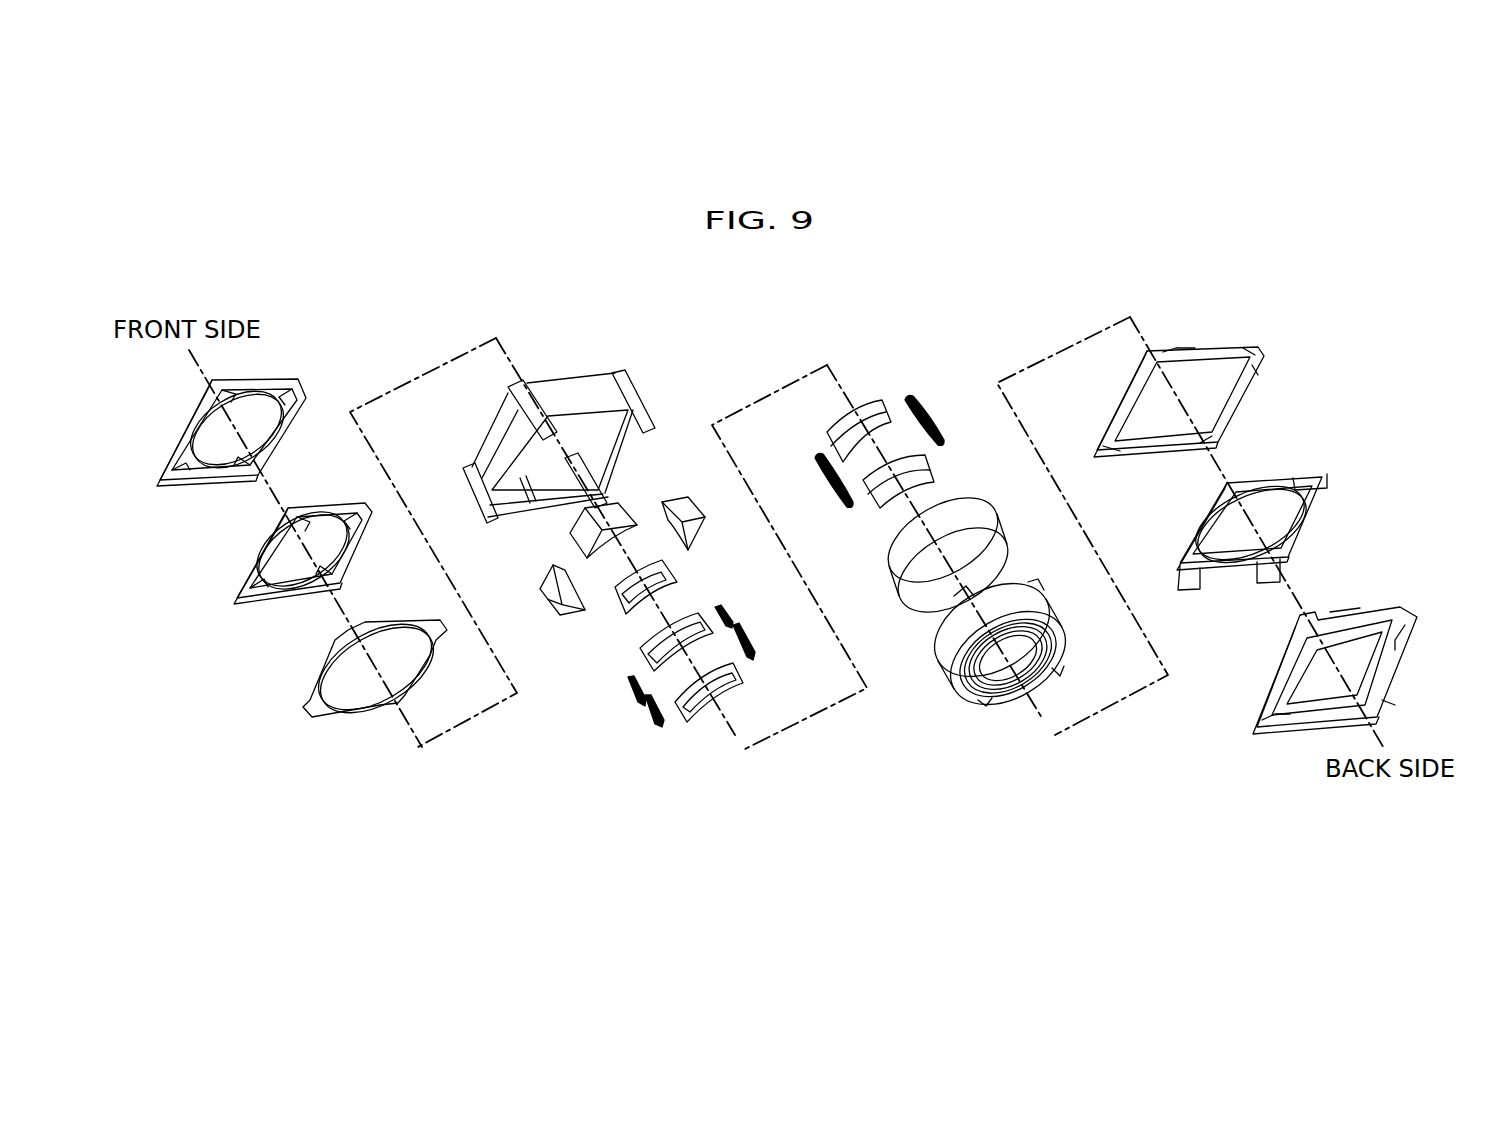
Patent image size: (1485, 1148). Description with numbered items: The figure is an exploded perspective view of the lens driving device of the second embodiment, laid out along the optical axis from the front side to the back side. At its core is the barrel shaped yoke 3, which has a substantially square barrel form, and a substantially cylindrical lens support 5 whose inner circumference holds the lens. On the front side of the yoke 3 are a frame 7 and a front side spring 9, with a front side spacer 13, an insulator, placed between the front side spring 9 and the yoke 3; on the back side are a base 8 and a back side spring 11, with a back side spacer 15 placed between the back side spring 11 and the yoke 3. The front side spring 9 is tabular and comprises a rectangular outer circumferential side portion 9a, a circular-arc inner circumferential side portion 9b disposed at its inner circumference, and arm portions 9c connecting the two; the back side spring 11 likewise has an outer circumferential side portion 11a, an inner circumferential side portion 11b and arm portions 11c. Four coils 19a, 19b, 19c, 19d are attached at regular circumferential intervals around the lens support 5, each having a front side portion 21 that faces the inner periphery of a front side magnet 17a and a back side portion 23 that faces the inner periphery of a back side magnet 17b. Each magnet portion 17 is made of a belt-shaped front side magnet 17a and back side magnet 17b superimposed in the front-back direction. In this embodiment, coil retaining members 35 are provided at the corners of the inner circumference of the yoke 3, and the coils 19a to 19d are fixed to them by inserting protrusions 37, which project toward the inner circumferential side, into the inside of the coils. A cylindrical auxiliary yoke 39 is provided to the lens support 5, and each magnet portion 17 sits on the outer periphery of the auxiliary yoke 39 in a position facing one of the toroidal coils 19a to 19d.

The yoke 3 is at (632, 380).
The lens support 5 is at (958, 697).
The frame 7 is at (165, 472).
The base 8 is at (1257, 727).
The front side spring 9 is at (273, 580).
The outer circumferential side portion 9a is at (247, 568).
The inner circumferential side portion 9b is at (270, 600).
The arm portion 9c is at (247, 600).
The back side spring 11 is at (1241, 521).
The outer circumferential side portion 11a is at (1310, 530).
The inner circumferential side portion 11b is at (1270, 488).
The arm portion 11c is at (1282, 562).
The front side spacer 13 is at (303, 717).
The back side spacer 15 is at (1190, 347).
The magnet portion 17 is at (880, 397).
The front side magnet 17a is at (878, 400).
The back side magnet 17b is at (900, 400).
The coil 19a is at (641, 649).
The coil 19b is at (643, 714).
The coil 19c is at (698, 718).
The coil 19d is at (735, 612).
The front side portion 21 is at (670, 612).
The back side portion 23 is at (705, 650).
The coil retaining member 35 is at (565, 615).
The protrusion 37 is at (580, 598).
The auxiliary yoke 39 is at (965, 508).